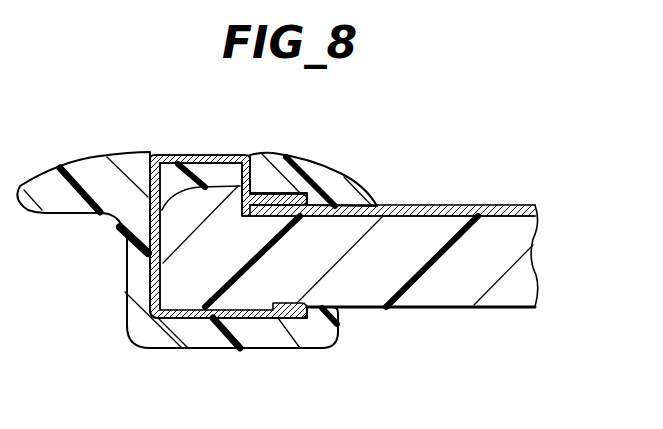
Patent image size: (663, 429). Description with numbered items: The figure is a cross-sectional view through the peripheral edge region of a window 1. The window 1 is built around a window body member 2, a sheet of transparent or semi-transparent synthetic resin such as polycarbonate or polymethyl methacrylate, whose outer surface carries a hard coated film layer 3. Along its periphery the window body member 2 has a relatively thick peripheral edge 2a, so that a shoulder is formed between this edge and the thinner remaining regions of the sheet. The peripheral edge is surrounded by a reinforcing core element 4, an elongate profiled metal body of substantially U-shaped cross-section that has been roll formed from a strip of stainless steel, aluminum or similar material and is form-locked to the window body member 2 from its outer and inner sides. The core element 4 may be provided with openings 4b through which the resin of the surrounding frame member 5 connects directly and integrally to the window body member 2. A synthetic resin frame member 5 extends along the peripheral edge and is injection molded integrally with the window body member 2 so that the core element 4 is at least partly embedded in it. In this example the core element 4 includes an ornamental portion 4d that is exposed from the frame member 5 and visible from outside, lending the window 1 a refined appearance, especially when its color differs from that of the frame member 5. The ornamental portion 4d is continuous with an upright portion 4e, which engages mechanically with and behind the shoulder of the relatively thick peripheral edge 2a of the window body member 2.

The window 1 is at (421, 178).
The window body member 2 is at (513, 248).
The relatively thick peripheral edge 2a is at (205, 194).
The hard coated film layer 3 is at (495, 206).
The reinforcing core element 4 is at (157, 290).
The openings 4b is at (152, 243).
The ornamental portion 4d is at (173, 156).
The upright portion 4e is at (253, 193).
The frame member 5 is at (78, 163).